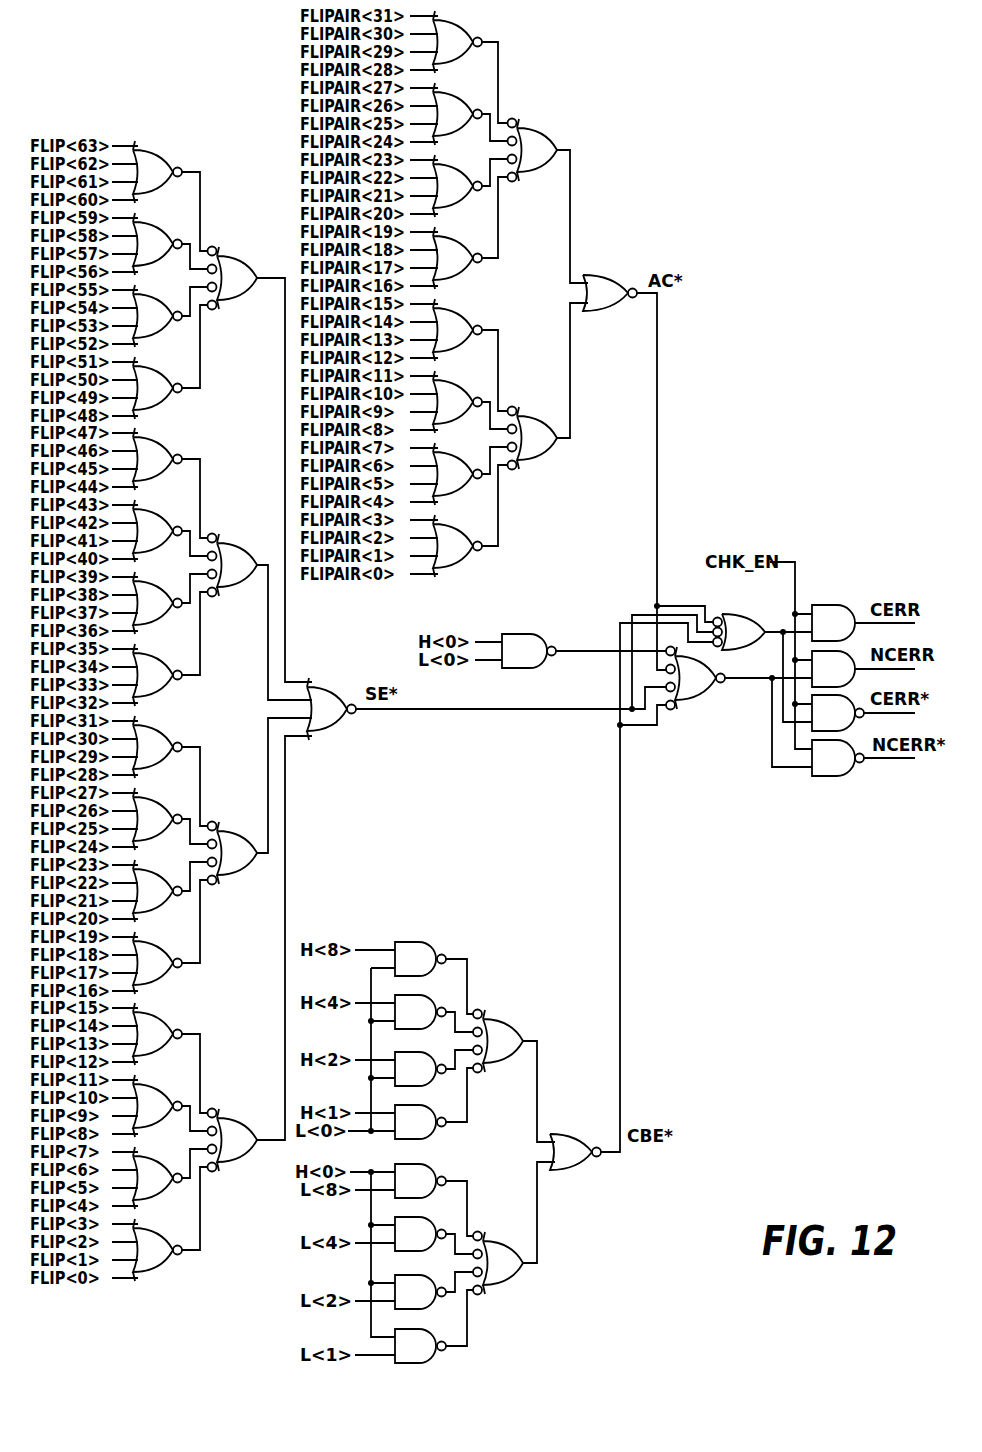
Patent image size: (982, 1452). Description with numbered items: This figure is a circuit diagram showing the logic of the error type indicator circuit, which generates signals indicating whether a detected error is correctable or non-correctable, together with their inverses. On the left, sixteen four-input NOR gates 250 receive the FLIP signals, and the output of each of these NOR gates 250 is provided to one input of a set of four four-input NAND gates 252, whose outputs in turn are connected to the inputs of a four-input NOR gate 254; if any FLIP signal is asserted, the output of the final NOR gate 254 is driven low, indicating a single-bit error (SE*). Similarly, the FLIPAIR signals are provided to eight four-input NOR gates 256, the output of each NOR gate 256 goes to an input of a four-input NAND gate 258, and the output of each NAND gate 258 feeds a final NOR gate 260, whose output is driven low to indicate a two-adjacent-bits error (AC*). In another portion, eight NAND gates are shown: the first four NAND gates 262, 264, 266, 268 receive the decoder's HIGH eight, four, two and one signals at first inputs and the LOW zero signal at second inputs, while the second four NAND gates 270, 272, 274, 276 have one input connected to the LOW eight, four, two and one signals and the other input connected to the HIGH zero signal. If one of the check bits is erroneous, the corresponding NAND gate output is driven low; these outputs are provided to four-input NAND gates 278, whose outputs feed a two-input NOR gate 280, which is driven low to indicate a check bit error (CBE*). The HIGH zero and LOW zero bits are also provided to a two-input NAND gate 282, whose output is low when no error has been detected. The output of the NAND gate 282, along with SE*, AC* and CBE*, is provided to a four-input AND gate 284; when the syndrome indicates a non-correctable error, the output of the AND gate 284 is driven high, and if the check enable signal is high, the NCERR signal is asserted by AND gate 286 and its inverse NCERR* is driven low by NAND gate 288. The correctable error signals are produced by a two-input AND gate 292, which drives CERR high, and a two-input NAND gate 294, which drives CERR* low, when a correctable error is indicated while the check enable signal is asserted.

The four-input NOR gates 250 is at (143, 212).
The 4-input NAND gates 252 is at (230, 262).
The 4-input NOR gate 254 is at (318, 690).
The 4-input NOR gates 256 is at (443, 82).
The 4-input NAND gate 258 is at (525, 130).
The final NOR gate 260 is at (588, 276).
The NAND gate 262 is at (436, 942).
The NAND gate 264 is at (416, 995).
The NAND gate 266 is at (438, 1052).
The NAND gate 268 is at (442, 1128).
The NAND gate 270 is at (436, 1166).
The NAND gate 272 is at (416, 1218).
The NAND gate 274 is at (438, 1274).
The NAND gate 276 is at (442, 1353).
The four-input NAND gate 278 is at (508, 1028).
The two-input NOR gate 280 is at (586, 1167).
The two-input NAND gate 282 is at (527, 634).
The four-input AND gate 284 is at (692, 698).
The AND gate 286 is at (846, 652).
The NAND gate 288 is at (836, 777).
The two-input AND gate 292 is at (838, 606).
The two-input NAND gate 294 is at (846, 697).